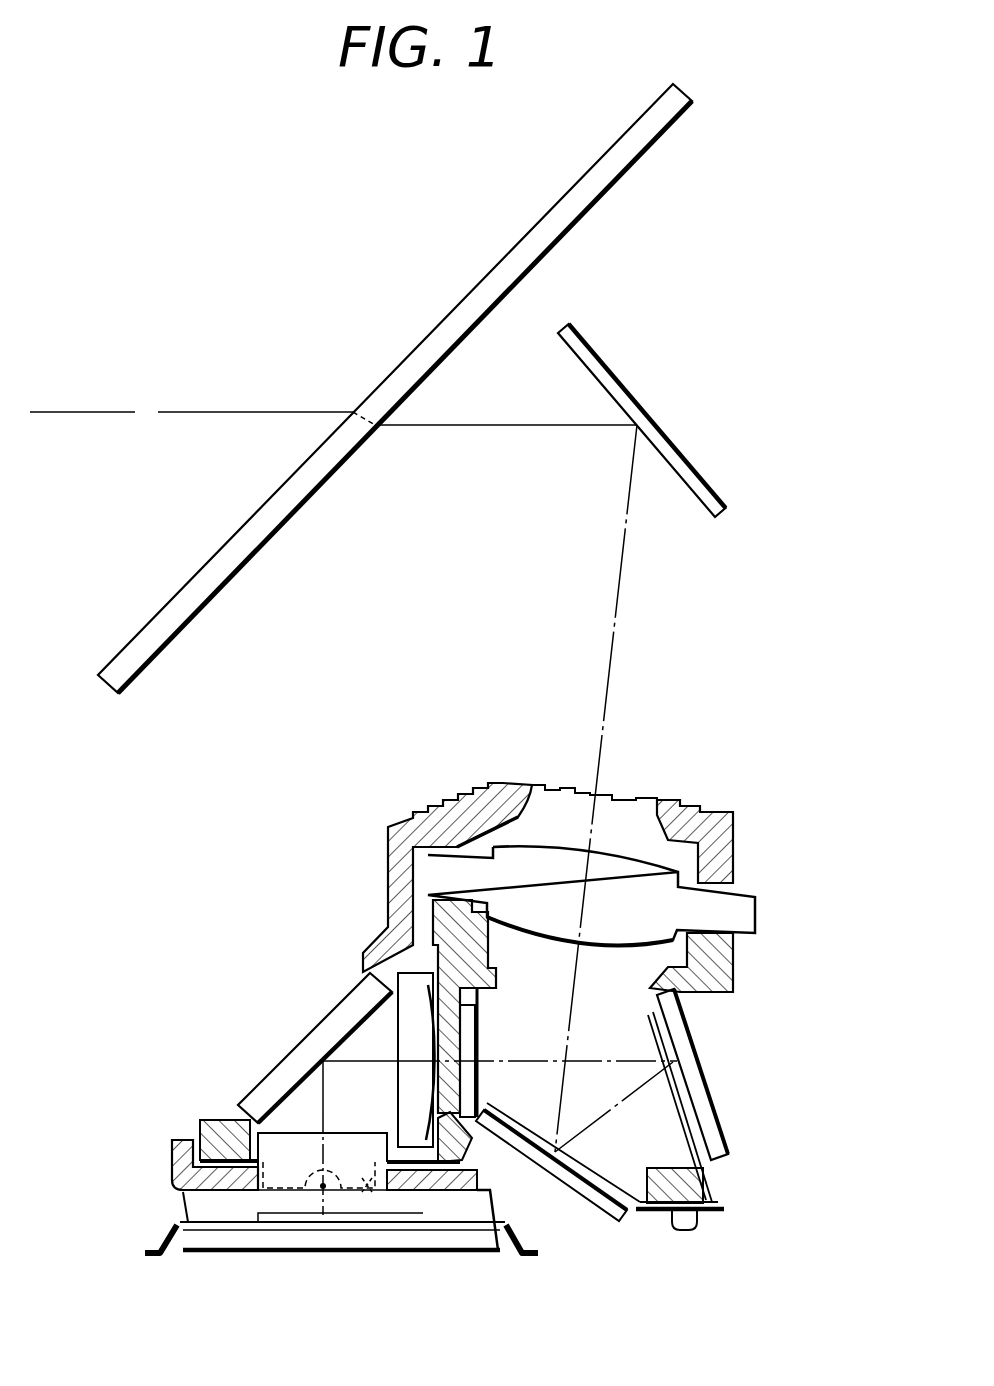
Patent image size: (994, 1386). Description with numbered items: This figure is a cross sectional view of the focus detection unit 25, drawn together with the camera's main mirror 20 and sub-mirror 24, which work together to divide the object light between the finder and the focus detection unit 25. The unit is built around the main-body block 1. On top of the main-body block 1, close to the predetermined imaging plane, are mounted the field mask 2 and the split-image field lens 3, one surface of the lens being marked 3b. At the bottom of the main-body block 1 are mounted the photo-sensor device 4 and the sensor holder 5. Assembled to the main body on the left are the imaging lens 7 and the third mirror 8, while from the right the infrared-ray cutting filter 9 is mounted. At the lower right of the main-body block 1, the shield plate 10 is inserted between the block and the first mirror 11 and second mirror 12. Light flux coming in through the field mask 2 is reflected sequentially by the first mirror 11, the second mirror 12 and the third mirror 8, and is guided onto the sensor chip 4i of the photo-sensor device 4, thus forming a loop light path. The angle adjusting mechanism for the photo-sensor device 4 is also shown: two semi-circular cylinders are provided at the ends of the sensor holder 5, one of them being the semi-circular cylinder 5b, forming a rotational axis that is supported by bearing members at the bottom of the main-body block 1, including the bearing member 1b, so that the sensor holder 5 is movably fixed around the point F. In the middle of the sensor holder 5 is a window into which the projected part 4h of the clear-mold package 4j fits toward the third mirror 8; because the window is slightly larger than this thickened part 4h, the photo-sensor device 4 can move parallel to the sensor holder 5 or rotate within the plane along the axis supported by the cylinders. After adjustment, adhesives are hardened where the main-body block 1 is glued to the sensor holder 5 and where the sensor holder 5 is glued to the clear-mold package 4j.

The main-body block 1 is at (722, 965).
The bearing member 1b is at (370, 1195).
The field mask 2 is at (723, 835).
The split-image field lens 3 is at (743, 912).
The lens surface 3b is at (605, 882).
The photo-sensor device 4 is at (470, 1245).
The projected part of the clear-mold package 4h is at (305, 1143).
The sensor chip 4i is at (278, 1218).
The clear-mold package 4j is at (212, 1242).
The sensor holder 5 is at (172, 1150).
The semi-circular cylinder 5b is at (333, 1190).
The imaging lens 7 is at (407, 1020).
The third mirror 8 is at (353, 1007).
The infrared-ray cutting filter 9 is at (470, 1030).
The shield plate 10 is at (723, 1198).
The first mirror 11 is at (602, 1200).
The second mirror 12 is at (703, 1105).
The main mirror 20 is at (178, 618).
The sub-mirror 24 is at (598, 362).
The focus detection unit 25 is at (566, 1262).
The point F is at (323, 1188).